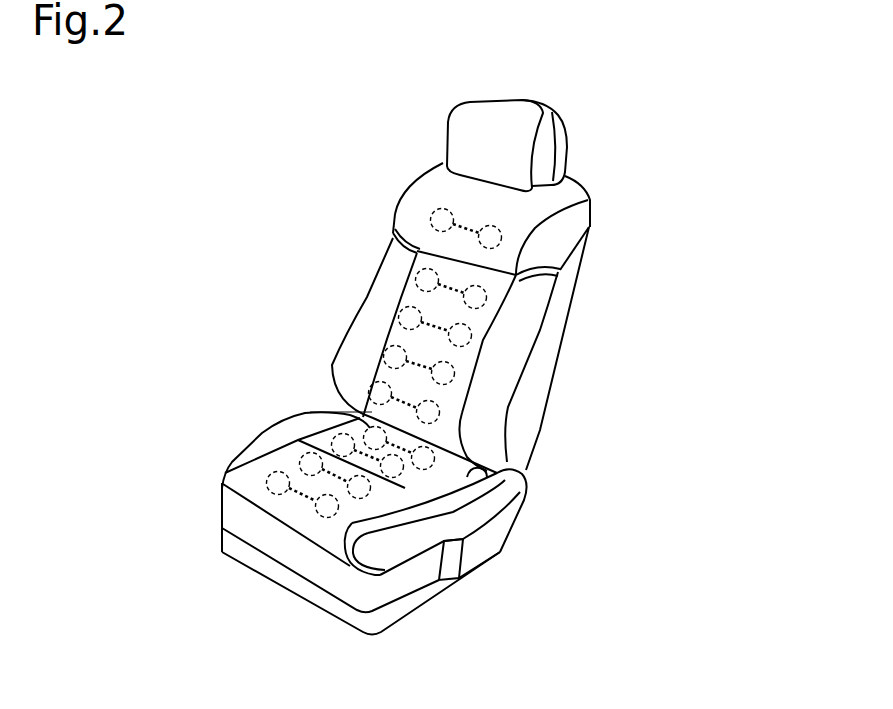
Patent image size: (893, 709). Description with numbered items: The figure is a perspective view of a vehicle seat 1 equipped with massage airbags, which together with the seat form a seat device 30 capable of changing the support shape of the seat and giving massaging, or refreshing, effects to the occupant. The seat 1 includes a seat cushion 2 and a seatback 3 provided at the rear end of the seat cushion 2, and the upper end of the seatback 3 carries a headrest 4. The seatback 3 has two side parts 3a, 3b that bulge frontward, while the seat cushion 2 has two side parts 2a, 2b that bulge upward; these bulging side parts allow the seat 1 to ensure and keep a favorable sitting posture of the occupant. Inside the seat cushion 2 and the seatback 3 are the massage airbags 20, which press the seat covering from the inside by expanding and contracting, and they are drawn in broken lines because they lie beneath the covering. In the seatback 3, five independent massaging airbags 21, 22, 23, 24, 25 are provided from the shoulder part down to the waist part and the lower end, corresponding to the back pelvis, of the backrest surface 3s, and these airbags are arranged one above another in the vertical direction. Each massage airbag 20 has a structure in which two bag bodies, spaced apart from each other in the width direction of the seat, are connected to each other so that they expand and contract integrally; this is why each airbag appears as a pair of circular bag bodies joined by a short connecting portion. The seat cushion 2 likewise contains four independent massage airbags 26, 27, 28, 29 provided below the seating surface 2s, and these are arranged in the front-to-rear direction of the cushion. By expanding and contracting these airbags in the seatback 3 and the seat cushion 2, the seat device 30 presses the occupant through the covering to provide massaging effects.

The vehicle seat 1 is at (401, 360).
The seat device 30 is at (201, 132).
The seat cushion 2 is at (224, 473).
The side part 2a is at (290, 416).
The side part 2b is at (506, 499).
The seating surface 2s is at (296, 508).
The seatback 3 is at (589, 242).
The side part 3a is at (390, 250).
The side part 3b is at (533, 292).
The backrest surface 3s is at (433, 303).
The headrest 4 is at (567, 147).
The massage airbags 20 is at (404, 399).
The massaging airbag 21 is at (430, 216).
The massaging airbag 22 is at (488, 298).
The massaging airbag 23 is at (472, 338).
The massaging airbag 24 is at (456, 372).
The massaging airbag 25 is at (440, 417).
The massage airbag 26 is at (335, 430).
The massage airbag 27 is at (428, 470).
The massage airbag 28 is at (312, 460).
The massage airbag 29 is at (340, 514).